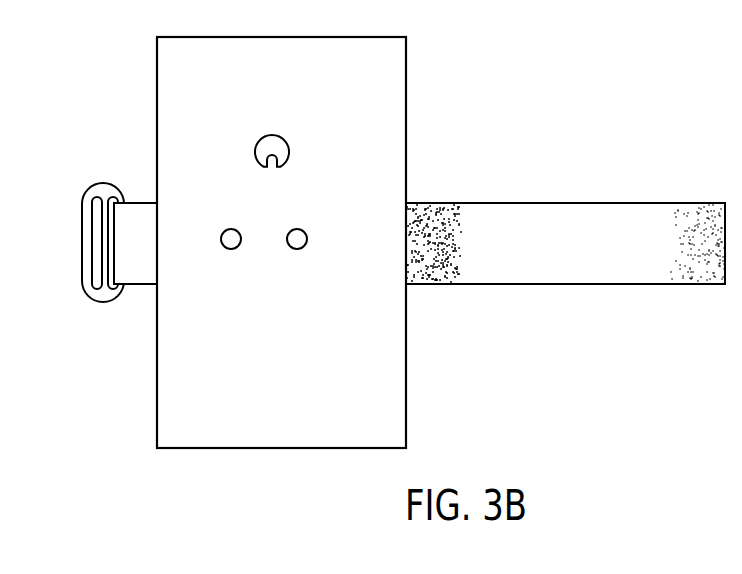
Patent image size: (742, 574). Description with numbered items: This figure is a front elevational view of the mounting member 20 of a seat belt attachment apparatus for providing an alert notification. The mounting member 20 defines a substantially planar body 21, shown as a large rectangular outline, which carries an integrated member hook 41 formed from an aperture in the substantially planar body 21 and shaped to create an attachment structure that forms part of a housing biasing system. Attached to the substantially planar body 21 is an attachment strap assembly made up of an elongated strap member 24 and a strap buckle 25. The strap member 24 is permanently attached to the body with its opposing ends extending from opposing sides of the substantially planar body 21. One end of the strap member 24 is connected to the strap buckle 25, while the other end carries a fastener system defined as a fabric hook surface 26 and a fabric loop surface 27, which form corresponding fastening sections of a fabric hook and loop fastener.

The mounting member 20 is at (403, 254).
The substantially planar body 21 is at (280, 437).
The elongated strap member 24 is at (560, 210).
The strap buckle 25 is at (102, 293).
The fabric hook surface 26 is at (695, 276).
The fabric loop surface 27 is at (437, 281).
The integrated member hook 41 is at (271, 148).